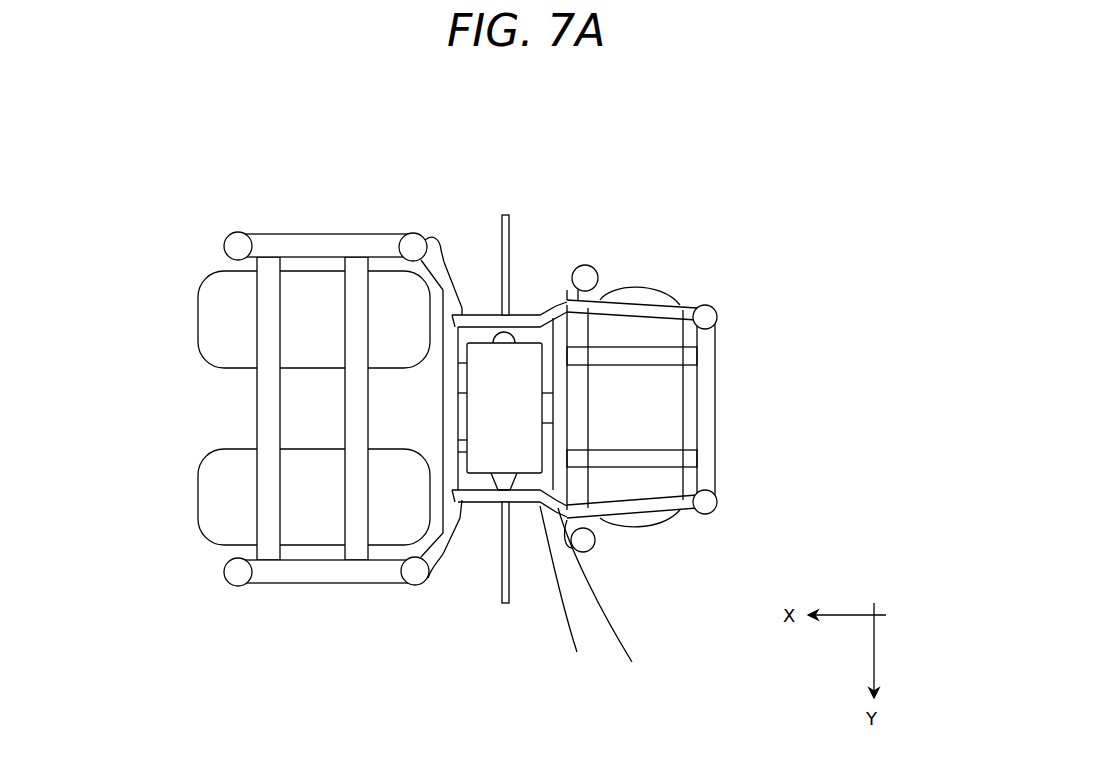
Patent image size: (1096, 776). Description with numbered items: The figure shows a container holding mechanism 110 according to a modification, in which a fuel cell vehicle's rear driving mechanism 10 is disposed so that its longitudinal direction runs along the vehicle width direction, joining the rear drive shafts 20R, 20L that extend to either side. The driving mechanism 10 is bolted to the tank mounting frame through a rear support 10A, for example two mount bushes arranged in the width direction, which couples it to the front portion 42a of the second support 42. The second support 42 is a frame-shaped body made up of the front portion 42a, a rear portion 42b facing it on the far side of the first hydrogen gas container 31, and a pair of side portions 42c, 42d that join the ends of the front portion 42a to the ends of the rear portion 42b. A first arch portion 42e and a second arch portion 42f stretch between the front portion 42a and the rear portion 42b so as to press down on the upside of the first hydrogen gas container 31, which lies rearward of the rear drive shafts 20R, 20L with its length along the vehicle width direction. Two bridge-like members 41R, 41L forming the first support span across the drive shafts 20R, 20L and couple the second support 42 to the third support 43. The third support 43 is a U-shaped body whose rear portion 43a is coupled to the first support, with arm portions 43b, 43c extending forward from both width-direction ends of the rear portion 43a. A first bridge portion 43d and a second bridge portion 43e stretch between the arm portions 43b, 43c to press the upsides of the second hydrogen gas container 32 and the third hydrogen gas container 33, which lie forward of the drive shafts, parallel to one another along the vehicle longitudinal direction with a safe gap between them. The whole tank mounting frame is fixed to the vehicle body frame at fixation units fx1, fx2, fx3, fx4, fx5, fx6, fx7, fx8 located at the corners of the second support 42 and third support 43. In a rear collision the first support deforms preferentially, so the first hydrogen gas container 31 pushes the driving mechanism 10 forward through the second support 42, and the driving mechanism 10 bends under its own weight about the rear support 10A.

The container holding mechanism 110 is at (117, 119).
The driving mechanism 10 is at (483, 358).
The rear support 10A is at (565, 591).
The rear drive shaft 20R is at (510, 235).
The rear drive shaft 20L is at (505, 604).
The first hydrogen gas container 31 is at (668, 425).
The second hydrogen gas container 32 is at (212, 307).
The third hydrogen gas container 33 is at (205, 507).
The bridge-like member 41R is at (520, 318).
The bridge-like member 41L is at (485, 503).
The second support 42 is at (690, 448).
The front portion 42a is at (611, 599).
The rear portion 42b is at (705, 398).
The side portion 42c is at (676, 292).
The side portion 42d is at (663, 525).
The first arch portion 42e is at (665, 462).
The second arch portion 42f is at (660, 356).
The third support 43 is at (281, 426).
The rear portion 43a is at (444, 450).
The arm portion 43b is at (298, 238).
The arm portion 43c is at (308, 580).
The first bridge portion 43d is at (260, 410).
The second bridge portion 43e is at (367, 425).
The fixation unit fx1 is at (714, 512).
The fixation unit fx2 is at (718, 312).
The fixation unit fx3 is at (590, 550).
The fixation unit fx4 is at (594, 272).
The fixation unit fx5 is at (410, 585).
The fixation unit fx6 is at (412, 248).
The fixation unit fx7 is at (226, 576).
The fixation unit fx8 is at (236, 247).